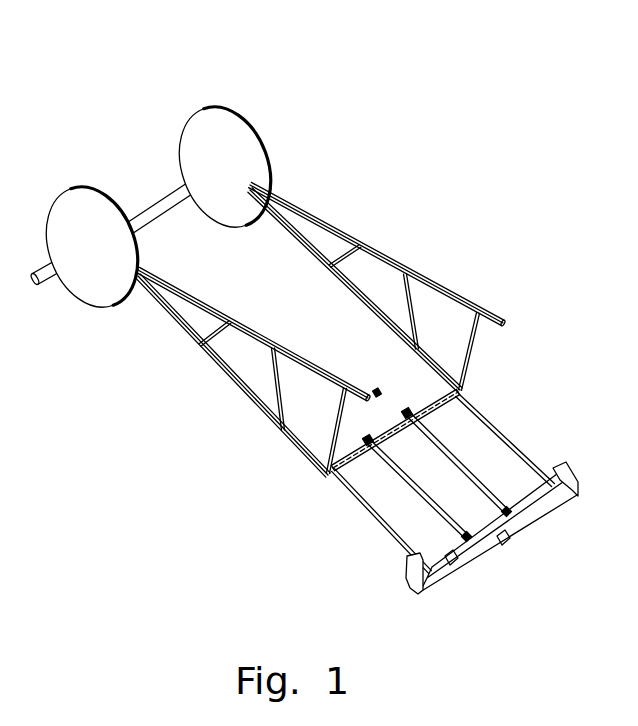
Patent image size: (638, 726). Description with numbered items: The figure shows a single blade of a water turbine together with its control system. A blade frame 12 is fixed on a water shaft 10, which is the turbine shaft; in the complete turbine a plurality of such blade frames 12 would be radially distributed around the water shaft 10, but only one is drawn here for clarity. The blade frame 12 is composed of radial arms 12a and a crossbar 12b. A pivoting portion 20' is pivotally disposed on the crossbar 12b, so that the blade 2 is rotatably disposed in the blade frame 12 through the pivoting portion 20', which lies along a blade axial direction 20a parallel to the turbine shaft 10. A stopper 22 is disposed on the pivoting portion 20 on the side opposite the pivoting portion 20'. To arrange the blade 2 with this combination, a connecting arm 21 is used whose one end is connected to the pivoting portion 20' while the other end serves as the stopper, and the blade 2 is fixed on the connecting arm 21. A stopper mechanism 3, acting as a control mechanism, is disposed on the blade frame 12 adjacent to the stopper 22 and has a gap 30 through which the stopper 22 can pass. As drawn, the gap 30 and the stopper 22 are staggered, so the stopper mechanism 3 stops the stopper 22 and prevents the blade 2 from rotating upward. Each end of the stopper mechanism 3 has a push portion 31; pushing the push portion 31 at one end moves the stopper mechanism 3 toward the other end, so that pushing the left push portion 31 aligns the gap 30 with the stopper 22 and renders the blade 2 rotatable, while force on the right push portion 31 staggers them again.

The water shaft 10 is at (158, 207).
The blade frame 12 is at (457, 272).
The radial arms 12a is at (473, 393).
The crossbar 12b is at (320, 440).
The blade 2 is at (483, 430).
The stopper mechanism 3 is at (512, 520).
The pivoting portion 20 is at (395, 429).
The pivoting portion 20' is at (388, 405).
The blade axial direction 20a is at (378, 393).
The connecting arm 21 is at (465, 466).
The stopper 22 is at (459, 545).
The gap 30 is at (450, 562).
The push portion 31 is at (574, 473).